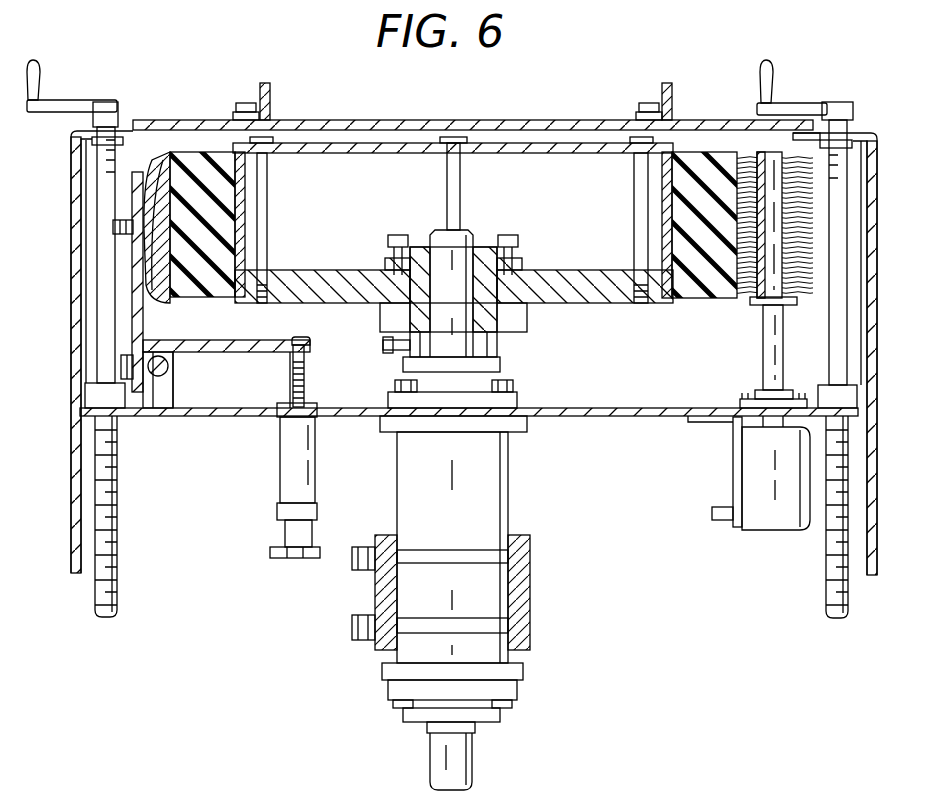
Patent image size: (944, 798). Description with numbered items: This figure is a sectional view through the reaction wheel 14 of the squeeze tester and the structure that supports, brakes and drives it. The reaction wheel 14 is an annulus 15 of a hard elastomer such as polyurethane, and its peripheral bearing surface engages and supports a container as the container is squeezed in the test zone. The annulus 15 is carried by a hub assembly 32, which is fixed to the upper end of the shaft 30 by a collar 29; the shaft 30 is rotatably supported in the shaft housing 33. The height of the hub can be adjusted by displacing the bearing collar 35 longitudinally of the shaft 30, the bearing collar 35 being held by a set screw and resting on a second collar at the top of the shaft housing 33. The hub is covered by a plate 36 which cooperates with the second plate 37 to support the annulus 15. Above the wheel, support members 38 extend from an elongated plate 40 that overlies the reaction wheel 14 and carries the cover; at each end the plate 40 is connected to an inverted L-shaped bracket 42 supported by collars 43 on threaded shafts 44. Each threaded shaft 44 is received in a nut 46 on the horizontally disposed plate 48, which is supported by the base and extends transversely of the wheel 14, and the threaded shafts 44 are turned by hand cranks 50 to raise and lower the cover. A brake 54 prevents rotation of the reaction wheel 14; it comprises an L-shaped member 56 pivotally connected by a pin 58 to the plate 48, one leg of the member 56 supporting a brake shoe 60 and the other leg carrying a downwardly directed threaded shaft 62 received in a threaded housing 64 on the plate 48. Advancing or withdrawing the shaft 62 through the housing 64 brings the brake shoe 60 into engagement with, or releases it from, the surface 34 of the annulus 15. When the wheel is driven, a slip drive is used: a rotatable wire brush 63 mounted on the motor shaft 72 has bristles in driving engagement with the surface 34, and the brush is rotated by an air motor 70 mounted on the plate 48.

The reaction wheel 14 is at (424, 99).
The annulus 15 is at (218, 217).
The collar 29 is at (484, 252).
The shaft 30 is at (462, 343).
The hub assembly 32 is at (590, 308).
The shaft housing 33 is at (506, 488).
The surface 34 is at (160, 278).
The bearing collar 35 is at (488, 352).
The plate 36 is at (378, 152).
The second plate 37 is at (330, 282).
The support members 38 is at (272, 100).
The elongated plate 40 is at (510, 120).
The inverted L-shaped bracket 42 is at (72, 192).
The collars 43 is at (115, 141).
The threaded shafts 44 is at (117, 495).
The nut 46 is at (92, 398).
The plate 48 is at (627, 413).
The hand cranks 50 is at (68, 102).
The brake 54 is at (220, 385).
The L-shaped member 56 is at (197, 345).
The pin 58 is at (170, 372).
The brake shoe 60 is at (165, 160).
The threaded shaft 62 is at (304, 396).
The wire brush 63 is at (744, 300).
The threaded housing 64 is at (285, 482).
The air motor 70 is at (752, 470).
The motor shaft 72 is at (772, 352).